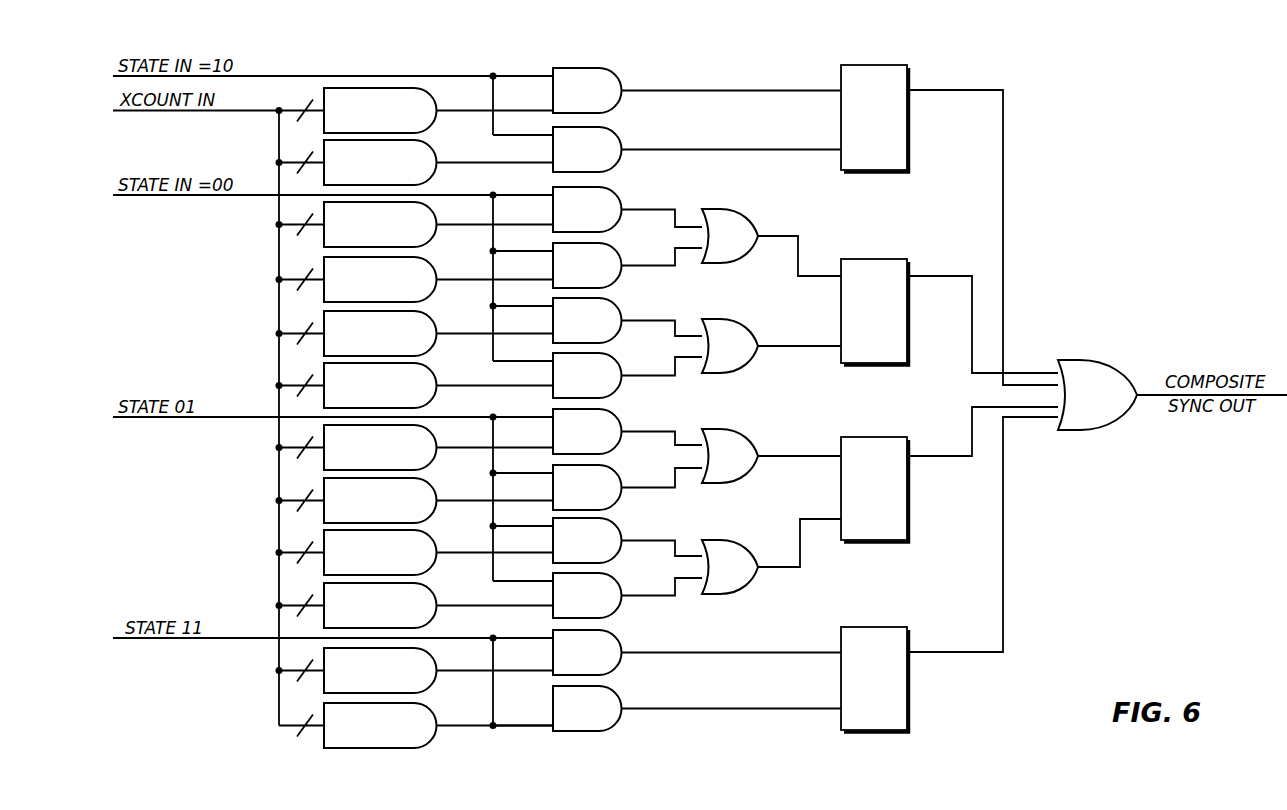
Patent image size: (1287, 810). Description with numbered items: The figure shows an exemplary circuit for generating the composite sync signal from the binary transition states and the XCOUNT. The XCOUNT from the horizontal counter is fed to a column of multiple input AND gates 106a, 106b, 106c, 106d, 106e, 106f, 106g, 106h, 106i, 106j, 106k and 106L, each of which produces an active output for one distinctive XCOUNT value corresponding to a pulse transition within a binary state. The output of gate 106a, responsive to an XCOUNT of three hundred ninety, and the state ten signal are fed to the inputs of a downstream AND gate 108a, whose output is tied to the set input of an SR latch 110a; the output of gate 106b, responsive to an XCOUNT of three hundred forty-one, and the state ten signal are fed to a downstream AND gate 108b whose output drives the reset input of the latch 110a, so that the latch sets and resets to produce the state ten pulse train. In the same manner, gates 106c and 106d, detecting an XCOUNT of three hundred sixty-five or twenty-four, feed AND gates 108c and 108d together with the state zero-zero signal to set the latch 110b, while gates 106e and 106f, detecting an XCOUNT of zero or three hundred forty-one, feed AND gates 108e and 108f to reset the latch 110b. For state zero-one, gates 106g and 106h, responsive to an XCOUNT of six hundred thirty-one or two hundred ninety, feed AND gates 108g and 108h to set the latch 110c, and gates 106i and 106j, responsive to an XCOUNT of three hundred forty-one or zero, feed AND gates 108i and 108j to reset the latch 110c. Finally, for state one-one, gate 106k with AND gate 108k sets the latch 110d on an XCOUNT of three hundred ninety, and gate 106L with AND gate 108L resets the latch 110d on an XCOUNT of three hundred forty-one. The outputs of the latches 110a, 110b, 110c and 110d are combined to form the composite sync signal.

The multiple input AND gate 106a is at (428, 95).
The multiple input AND gate 106b is at (428, 146).
The multiple input AND gate 106c is at (432, 222).
The multiple input AND gate 106d is at (432, 269).
The multiple input AND gate 106e is at (432, 324).
The multiple input AND gate 106f is at (432, 375).
The multiple input AND gate 106g is at (432, 443).
The multiple input AND gate 106h is at (432, 490).
The multiple input AND gate 106i is at (432, 543).
The multiple input AND gate 106j is at (432, 592).
The multiple input AND gate 106k is at (428, 659).
The multiple input AND gate 106L is at (428, 706).
The downstream AND gate 108a is at (622, 76).
The downstream AND gate 108b is at (623, 143).
The downstream AND gate 108c is at (623, 208).
The downstream AND gate 108d is at (621, 274).
The downstream AND gate 108e is at (621, 310).
The downstream AND gate 108f is at (619, 381).
The downstream AND gate 108g is at (628, 420).
The downstream AND gate 108h is at (617, 496).
The downstream AND gate 108i is at (628, 530).
The downstream AND gate 108j is at (620, 606).
The downstream AND gate 108k is at (621, 662).
The downstream AND gate 108L is at (622, 698).
The SR latch 110a is at (900, 66).
The SR latch 110b is at (895, 260).
The SR latch 110c is at (893, 437).
The SR latch 110d is at (893, 627).